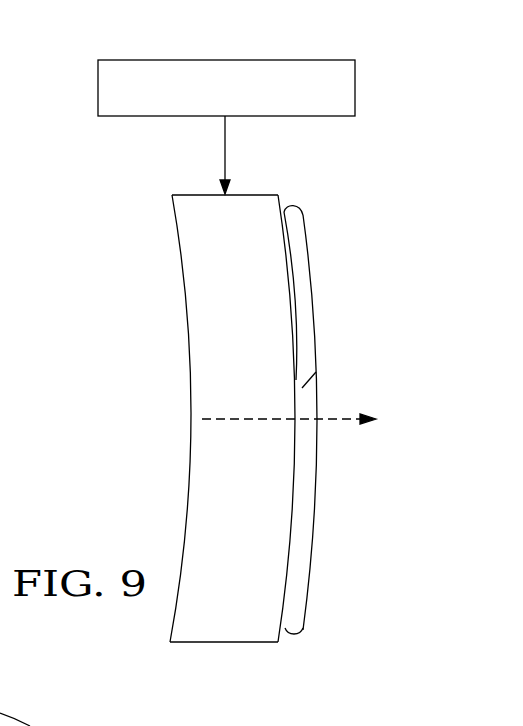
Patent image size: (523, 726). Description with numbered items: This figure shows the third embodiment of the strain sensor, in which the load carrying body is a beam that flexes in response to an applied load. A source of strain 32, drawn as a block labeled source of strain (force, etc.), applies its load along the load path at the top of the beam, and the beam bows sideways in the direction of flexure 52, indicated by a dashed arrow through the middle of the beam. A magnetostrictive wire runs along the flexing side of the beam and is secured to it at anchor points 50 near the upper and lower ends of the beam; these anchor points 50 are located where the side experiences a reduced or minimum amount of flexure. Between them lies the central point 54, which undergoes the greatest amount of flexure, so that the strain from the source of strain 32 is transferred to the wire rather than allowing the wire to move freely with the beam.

The source of strain 32 is at (128, 60).
The anchor points 50 is at (292, 203).
The central point 54 is at (316, 372).
The direction of flexure 52 is at (332, 419).